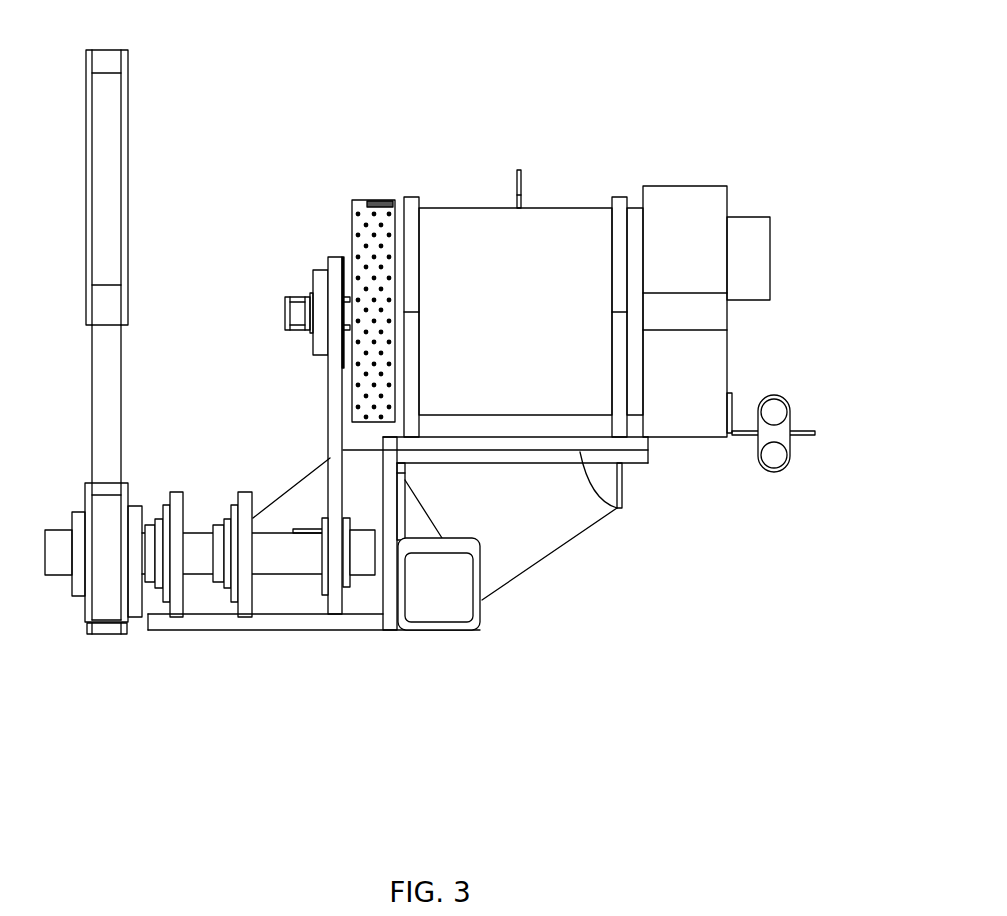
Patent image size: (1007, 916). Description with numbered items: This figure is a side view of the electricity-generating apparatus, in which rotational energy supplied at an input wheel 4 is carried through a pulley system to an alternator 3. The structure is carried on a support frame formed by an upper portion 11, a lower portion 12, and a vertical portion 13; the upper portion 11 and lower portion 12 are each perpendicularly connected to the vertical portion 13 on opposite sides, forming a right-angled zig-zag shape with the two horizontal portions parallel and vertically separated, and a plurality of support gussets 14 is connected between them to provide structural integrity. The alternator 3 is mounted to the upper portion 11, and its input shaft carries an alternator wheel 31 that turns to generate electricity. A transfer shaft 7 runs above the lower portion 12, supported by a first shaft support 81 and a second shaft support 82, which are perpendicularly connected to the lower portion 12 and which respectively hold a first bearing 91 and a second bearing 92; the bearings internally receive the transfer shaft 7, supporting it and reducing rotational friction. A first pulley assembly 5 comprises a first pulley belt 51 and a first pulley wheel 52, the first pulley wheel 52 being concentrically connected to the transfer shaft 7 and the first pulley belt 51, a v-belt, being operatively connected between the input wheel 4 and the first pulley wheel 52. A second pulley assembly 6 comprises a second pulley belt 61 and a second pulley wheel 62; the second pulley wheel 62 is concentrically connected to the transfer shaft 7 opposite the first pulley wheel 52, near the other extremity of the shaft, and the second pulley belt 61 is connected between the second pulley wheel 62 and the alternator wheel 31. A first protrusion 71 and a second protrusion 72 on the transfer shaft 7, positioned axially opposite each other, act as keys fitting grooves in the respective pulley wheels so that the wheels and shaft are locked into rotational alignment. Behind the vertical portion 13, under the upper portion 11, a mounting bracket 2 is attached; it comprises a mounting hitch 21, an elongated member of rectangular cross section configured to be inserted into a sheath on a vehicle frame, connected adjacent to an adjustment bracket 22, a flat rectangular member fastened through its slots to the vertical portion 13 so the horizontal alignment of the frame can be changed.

The mounting bracket 2 is at (505, 540).
The alternator 3 is at (503, 228).
The input wheel 4 is at (125, 115).
The first pulley assembly 5 is at (160, 300).
The second pulley assembly 6 is at (297, 390).
The transfer shaft 7 is at (273, 552).
The upper portion 11 is at (617, 508).
The lower portion 12 is at (343, 623).
The vertical portion 13 is at (392, 592).
The support gusset 14 is at (295, 498).
The mounting hitch 21 is at (448, 585).
The adjustment bracket 22 is at (405, 497).
The alternator wheel 31 is at (328, 262).
The first pulley belt 51 is at (103, 393).
The first pulley wheel 52 is at (88, 598).
The second pulley belt 61 is at (333, 413).
The second pulley wheel 62 is at (323, 513).
The first protrusion 71 is at (60, 530).
The second protrusion 72 is at (365, 530).
The first shaft support 81 is at (178, 600).
The second shaft support 82 is at (248, 595).
The first bearing 91 is at (167, 568).
The second bearing 92 is at (227, 562).